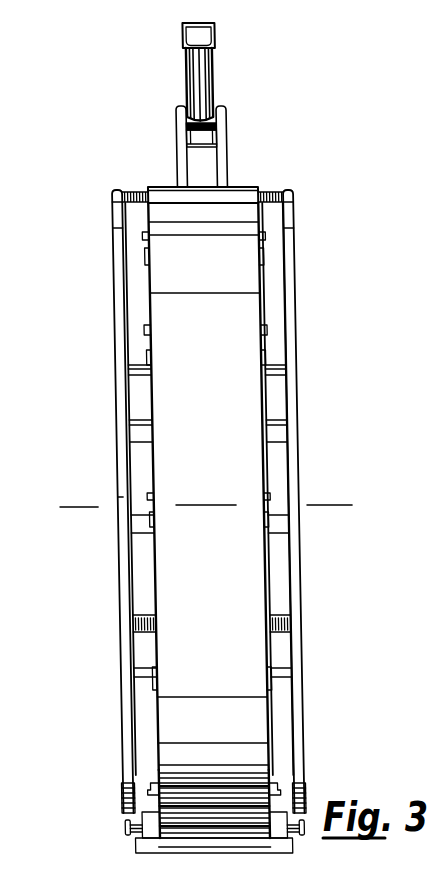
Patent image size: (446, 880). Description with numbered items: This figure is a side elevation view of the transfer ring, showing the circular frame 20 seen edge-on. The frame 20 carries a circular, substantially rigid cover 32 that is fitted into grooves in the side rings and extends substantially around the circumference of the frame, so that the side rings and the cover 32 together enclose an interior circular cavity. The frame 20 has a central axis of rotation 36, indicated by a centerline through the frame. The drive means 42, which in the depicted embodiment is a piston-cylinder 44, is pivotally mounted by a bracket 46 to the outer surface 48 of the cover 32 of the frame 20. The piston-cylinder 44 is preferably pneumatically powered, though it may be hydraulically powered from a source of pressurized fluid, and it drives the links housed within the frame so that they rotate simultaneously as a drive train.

The circular frame 20 is at (288, 245).
The cover 32 is at (226, 200).
The central axis of rotation 36 is at (314, 503).
The drive means 42 is at (166, 80).
The piston-cylinder 44 is at (212, 90).
The bracket 46 is at (223, 132).
The outer surface 48 is at (211, 279).